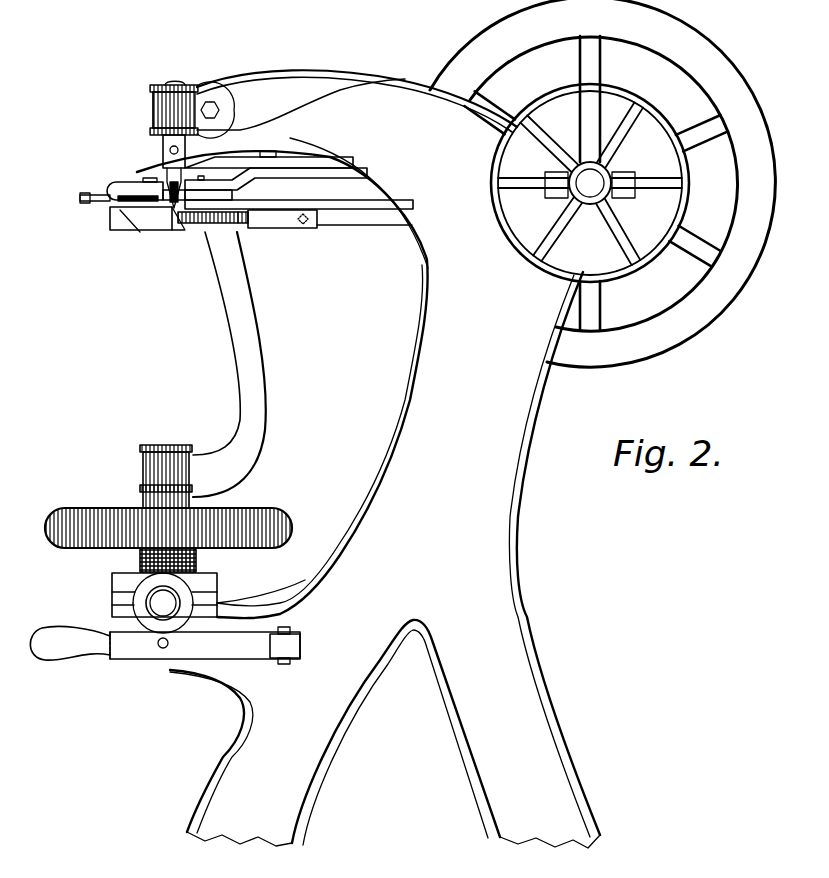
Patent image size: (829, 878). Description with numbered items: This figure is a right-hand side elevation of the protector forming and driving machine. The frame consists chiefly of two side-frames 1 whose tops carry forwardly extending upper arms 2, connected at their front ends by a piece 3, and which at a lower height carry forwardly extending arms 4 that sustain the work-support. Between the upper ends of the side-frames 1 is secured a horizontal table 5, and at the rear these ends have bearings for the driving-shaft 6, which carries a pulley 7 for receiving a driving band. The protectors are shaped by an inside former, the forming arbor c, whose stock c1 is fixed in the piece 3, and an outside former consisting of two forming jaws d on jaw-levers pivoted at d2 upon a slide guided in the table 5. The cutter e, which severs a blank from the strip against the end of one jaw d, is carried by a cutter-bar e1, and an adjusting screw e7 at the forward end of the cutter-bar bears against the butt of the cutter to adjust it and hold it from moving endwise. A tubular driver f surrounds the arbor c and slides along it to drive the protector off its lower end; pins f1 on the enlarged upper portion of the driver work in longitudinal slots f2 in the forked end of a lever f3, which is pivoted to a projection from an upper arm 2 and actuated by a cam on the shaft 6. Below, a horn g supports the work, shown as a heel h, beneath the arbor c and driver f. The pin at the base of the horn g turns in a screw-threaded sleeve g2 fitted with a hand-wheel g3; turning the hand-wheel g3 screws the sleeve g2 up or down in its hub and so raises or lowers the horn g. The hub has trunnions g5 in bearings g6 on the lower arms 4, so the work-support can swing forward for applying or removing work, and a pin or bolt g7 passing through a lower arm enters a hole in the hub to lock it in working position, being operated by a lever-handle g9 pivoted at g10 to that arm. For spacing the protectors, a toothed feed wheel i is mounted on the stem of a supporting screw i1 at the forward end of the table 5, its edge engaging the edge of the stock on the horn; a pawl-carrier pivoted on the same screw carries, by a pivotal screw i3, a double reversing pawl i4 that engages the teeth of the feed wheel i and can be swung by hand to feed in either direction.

The side-frame 1 is at (495, 538).
The upper arm 2 is at (300, 92).
The connecting piece 3 is at (166, 86).
The lower arm 4 is at (237, 606).
The table 5 is at (342, 196).
The driving-shaft 6 is at (600, 185).
The pulley 7 is at (660, 262).
The forming arbor c is at (170, 205).
The arbor stock c1 is at (180, 83).
The forming jaw d is at (182, 202).
The jaw-lever pivot d2 is at (272, 162).
The cutter e is at (165, 198).
The cutter-bar e1 is at (117, 180).
The adjusting screw e7 is at (83, 194).
The tubular driver f is at (166, 156).
The driver pin f1 is at (170, 122).
The longitudinal slot f2 is at (173, 190).
The driver lever f3 is at (264, 152).
The horn g is at (275, 352).
The sleeve g2 is at (137, 554).
The hand-wheel g3 is at (70, 502).
The trunnion g5 is at (172, 598).
The bearing g6 is at (146, 607).
The locking pin g7 is at (164, 649).
The lever-handle g9 is at (78, 656).
The lever-handle pivot g10 is at (286, 665).
The heel h is at (140, 232).
The feed wheel i is at (238, 228).
The supporting screw i1 is at (206, 226).
The pivotal screw i3 is at (263, 230).
The reversing pawl i4 is at (254, 214).